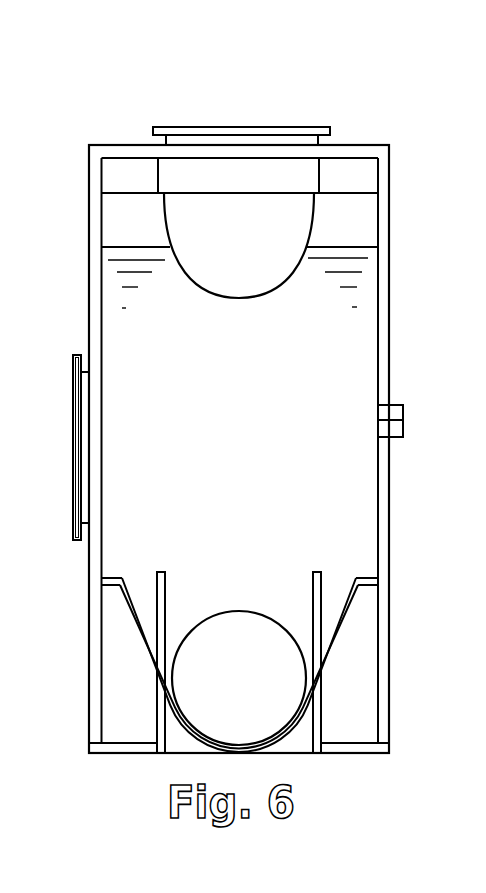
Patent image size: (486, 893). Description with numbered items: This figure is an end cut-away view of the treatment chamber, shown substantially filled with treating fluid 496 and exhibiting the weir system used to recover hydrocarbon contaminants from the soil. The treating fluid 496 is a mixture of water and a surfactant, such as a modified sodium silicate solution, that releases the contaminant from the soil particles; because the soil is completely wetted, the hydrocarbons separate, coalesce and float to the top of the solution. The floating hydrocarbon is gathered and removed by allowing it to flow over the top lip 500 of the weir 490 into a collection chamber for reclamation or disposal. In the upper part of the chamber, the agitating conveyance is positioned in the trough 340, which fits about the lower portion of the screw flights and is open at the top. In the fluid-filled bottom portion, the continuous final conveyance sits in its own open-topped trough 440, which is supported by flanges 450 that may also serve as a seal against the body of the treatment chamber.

The weir 490 is at (350, 187).
The top lip 500 is at (378, 193).
The treating fluid 496 is at (127, 247).
The trough 340 is at (240, 298).
The flanges 450 is at (366, 588).
The trough 440 is at (335, 643).